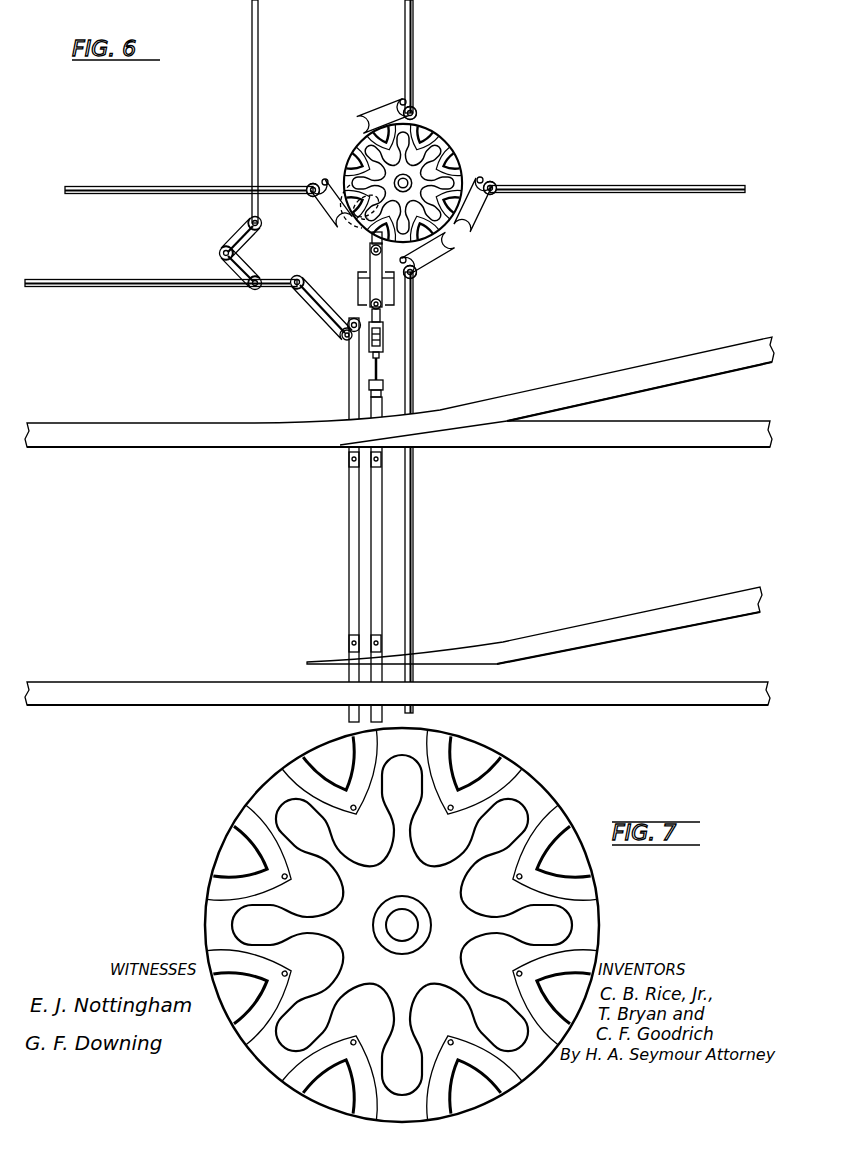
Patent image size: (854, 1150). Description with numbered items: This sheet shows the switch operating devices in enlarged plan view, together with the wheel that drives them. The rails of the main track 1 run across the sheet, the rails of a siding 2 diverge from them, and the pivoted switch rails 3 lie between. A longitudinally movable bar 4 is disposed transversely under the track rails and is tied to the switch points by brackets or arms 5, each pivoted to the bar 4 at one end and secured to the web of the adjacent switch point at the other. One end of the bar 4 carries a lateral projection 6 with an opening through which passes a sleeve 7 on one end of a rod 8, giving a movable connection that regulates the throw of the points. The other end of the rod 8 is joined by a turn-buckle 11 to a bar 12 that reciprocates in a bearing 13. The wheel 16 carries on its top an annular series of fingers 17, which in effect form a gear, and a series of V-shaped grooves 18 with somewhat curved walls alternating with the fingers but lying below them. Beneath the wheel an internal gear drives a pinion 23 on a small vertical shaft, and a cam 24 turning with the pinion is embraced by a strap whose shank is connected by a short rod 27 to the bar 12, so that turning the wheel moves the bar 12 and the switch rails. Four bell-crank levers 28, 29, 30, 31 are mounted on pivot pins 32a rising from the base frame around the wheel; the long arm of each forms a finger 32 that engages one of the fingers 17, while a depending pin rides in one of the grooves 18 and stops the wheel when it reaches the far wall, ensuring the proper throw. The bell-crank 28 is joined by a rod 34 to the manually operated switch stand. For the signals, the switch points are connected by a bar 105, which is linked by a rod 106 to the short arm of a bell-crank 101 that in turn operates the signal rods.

In FIG. 6, the rails of the main track 1 is at (738, 447).
In FIG. 6, the rails of a siding 2 is at (639, 382).
In FIG. 6, the pivoted switch rails 3 is at (492, 446).
In FIG. 6, the longitudinally movable bar 4 is at (382, 532).
In FIG. 6, the brackets or arms 5 is at (381, 460).
In FIG. 6, the lateral projection 6 is at (384, 384).
In FIG. 6, the sleeve 7 is at (386, 392).
In FIG. 6, the rod 8 is at (378, 356).
In FIG. 6, the turn-buckle 11 is at (386, 333).
In FIG. 6, the bar 12 is at (370, 265).
In FIG. 6, the bearing 13 is at (358, 289).
In FIG. 6, the wheel 16 is at (433, 160).
In FIG. 7, the wheel 16 is at (522, 798).
In FIG. 6, the fingers 17 is at (372, 150).
In FIG. 7, the fingers 17 is at (402, 925).
In FIG. 6, the V-shaped grooves 18 is at (360, 157).
In FIG. 7, the V-shaped grooves 18 is at (506, 765).
In FIG. 6, the pinion 23 is at (335, 185).
In FIG. 6, the cam 24 is at (358, 228).
In FIG. 6, the short rod 27 is at (372, 240).
In FIG. 6, the bell-crank lever 28 is at (388, 103).
In FIG. 6, the bell-crank lever 29 is at (345, 210).
In FIG. 6, the bell-crank lever 30 is at (474, 205).
In FIG. 6, the bell-crank lever 31 is at (430, 254).
In FIG. 6, the finger 32 is at (416, 108).
In FIG. 6, the pivot pins 32a is at (404, 100).
In FIG. 6, the rod 34 is at (414, 28).
In FIG. 6, the bell-crank 101 is at (322, 302).
In FIG. 6, the bar 105 is at (349, 503).
In FIG. 6, the rod 106 is at (351, 380).